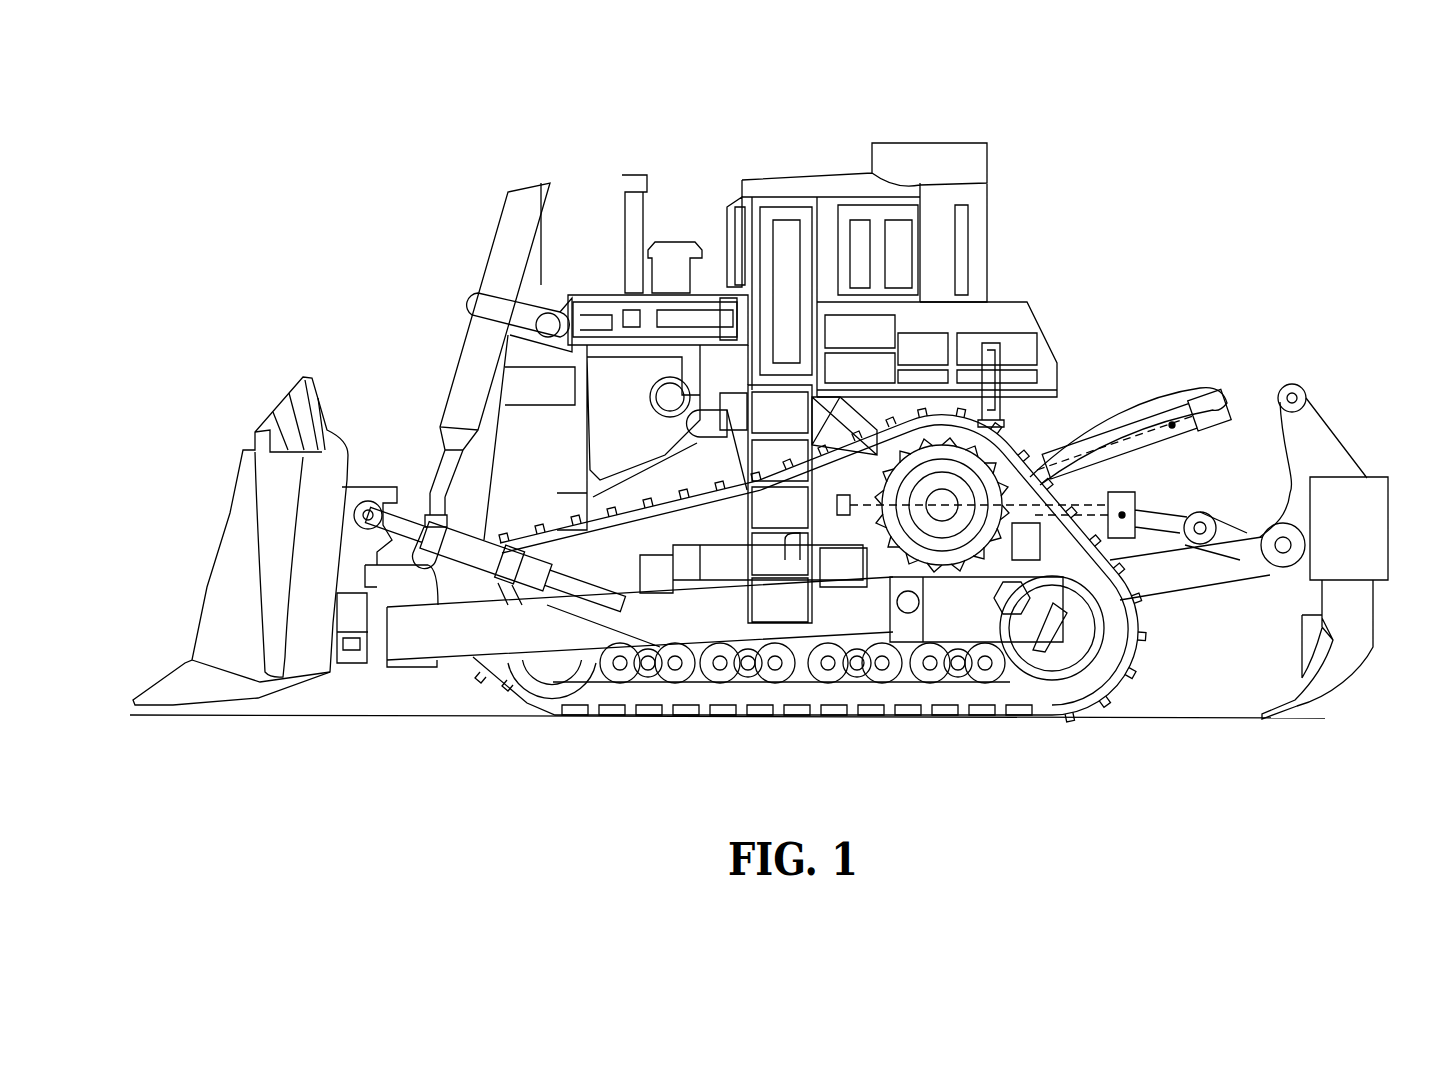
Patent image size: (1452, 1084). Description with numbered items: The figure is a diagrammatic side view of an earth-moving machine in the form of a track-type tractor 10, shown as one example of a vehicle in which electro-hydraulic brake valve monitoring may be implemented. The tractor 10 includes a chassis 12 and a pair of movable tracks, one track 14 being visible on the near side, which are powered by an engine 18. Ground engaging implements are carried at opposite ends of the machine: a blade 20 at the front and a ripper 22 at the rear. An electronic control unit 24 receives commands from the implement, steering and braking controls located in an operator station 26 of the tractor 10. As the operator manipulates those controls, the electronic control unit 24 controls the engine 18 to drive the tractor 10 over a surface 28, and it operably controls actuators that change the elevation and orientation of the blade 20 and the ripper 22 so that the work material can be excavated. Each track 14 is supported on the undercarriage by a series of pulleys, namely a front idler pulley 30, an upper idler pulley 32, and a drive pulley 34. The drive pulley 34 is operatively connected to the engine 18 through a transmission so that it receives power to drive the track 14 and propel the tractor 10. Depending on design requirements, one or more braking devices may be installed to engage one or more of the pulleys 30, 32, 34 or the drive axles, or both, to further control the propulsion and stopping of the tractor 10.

The track-type tractor 10 is at (810, 160).
The chassis 12 is at (1062, 300).
The track 14 is at (635, 690).
The engine 18 is at (625, 383).
The blade 20 is at (233, 493).
The ripper 22 is at (1378, 655).
The electronic control unit 24 is at (1013, 556).
The operator station 26 is at (847, 186).
The surface 28 is at (337, 700).
The front idler pulley 30 is at (543, 660).
The upper idler pulley 32 is at (950, 475).
The drive pulley 34 is at (1057, 648).